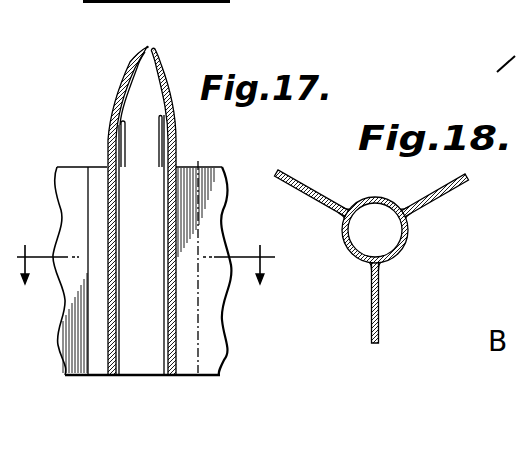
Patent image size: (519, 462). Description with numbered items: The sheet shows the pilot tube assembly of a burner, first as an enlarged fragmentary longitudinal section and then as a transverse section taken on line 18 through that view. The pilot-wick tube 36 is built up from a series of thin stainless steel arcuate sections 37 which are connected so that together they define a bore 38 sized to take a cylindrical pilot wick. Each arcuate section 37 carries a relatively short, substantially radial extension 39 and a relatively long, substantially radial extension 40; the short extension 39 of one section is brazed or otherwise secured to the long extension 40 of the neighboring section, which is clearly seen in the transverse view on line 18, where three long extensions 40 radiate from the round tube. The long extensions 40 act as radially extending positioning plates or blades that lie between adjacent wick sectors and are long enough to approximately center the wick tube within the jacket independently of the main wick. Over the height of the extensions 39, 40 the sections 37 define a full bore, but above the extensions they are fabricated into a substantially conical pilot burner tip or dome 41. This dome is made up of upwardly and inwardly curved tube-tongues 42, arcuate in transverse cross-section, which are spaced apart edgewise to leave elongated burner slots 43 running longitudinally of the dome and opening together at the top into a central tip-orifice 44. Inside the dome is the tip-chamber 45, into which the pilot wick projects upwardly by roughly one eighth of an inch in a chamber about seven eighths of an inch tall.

In FIG. 17, the pilot-wick tube 36 is at (148, 195).
In FIG. 18, the pilot-wick tube 36 is at (378, 253).
In FIG. 17, the arcuate sections 37 is at (176, 238).
In FIG. 18, the arcuate sections 37 is at (378, 198).
In FIG. 17, the bore 38 is at (160, 326).
In FIG. 18, the bore 38 is at (395, 229).
In FIG. 17, the short radial extension 39 is at (95, 195).
In FIG. 18, the short radial extension 39 is at (338, 213).
In FIG. 17, the long radial extension 40 is at (65, 168).
In FIG. 18, the long radial extension 40 is at (326, 198).
In FIG. 17, the pilot burner tip or dome 41 is at (121, 61).
In FIG. 17, the tube-tongues 42 is at (136, 54).
In FIG. 17, the burner slots 43 is at (120, 120).
In FIG. 17, the central tip-orifice 44 is at (149, 46).
In FIG. 17, the tip-chamber 45 is at (135, 87).
In FIG. 17, the section line 18— 18 is at (145, 278).